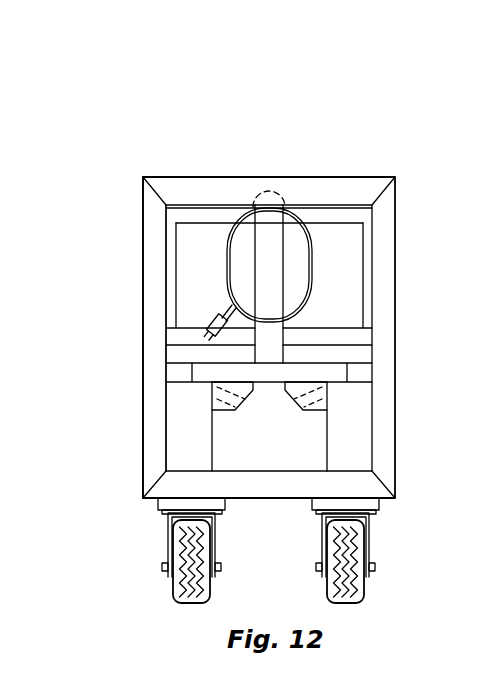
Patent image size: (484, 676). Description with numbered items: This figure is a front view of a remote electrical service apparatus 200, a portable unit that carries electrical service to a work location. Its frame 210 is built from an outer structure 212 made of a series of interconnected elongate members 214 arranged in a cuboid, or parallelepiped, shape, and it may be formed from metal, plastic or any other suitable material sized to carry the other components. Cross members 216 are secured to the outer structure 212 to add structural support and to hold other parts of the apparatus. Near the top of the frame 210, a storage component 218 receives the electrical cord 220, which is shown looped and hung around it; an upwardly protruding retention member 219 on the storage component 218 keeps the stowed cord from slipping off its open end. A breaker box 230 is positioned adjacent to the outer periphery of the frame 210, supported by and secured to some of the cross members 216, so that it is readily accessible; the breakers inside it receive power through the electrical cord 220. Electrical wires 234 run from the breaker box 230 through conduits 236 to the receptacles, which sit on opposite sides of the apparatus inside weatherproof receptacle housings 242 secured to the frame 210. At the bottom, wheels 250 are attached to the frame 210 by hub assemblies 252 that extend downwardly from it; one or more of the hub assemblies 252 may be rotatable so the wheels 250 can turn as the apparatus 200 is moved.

The remote electrical service apparatus 200 is at (152, 78).
The frame 210 is at (134, 191).
The outer structure 212 is at (155, 188).
The elongate members 214 is at (210, 192).
The cross members 216 is at (325, 373).
The storage component 218 is at (268, 265).
The retention member 219 is at (268, 180).
The electrical cord 220 is at (297, 213).
The breaker box 230 is at (348, 292).
The electrical wires 234 is at (200, 380).
The conduits 236 is at (285, 398).
The weatherproof receptacle housings 242 is at (357, 425).
The wheels 250 is at (352, 543).
The hub assemblies 252 is at (152, 520).